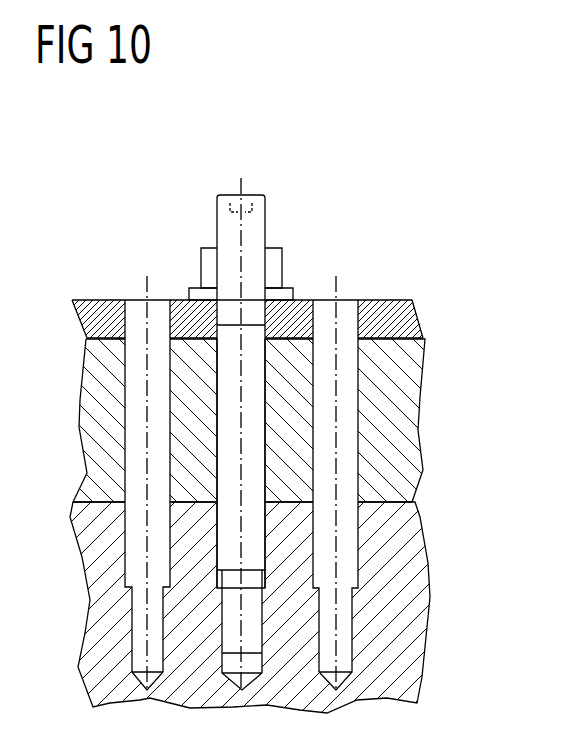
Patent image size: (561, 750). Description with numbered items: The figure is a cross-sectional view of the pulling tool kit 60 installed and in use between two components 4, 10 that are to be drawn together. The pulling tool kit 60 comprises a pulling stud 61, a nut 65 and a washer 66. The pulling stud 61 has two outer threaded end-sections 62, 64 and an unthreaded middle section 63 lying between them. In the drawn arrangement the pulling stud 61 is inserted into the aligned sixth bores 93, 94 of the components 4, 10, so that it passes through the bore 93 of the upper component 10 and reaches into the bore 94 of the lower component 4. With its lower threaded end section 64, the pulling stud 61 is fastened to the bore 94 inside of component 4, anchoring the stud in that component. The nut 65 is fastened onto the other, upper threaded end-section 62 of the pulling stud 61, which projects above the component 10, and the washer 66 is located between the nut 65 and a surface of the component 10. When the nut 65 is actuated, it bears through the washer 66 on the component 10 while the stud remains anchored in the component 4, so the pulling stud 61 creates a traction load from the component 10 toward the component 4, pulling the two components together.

The component 4 is at (92, 645).
The component 10 is at (412, 379).
The pulling tool kit 60 is at (306, 146).
The pulling stud 61 is at (297, 434).
The threaded end-section 62 is at (258, 218).
The unthreaded middle section 63 is at (232, 438).
The threaded end-section 64 is at (265, 578).
The nut 65 is at (210, 260).
The washer 66 is at (193, 293).
The sixth bore 93 is at (217, 393).
The sixth bore 94 is at (217, 530).